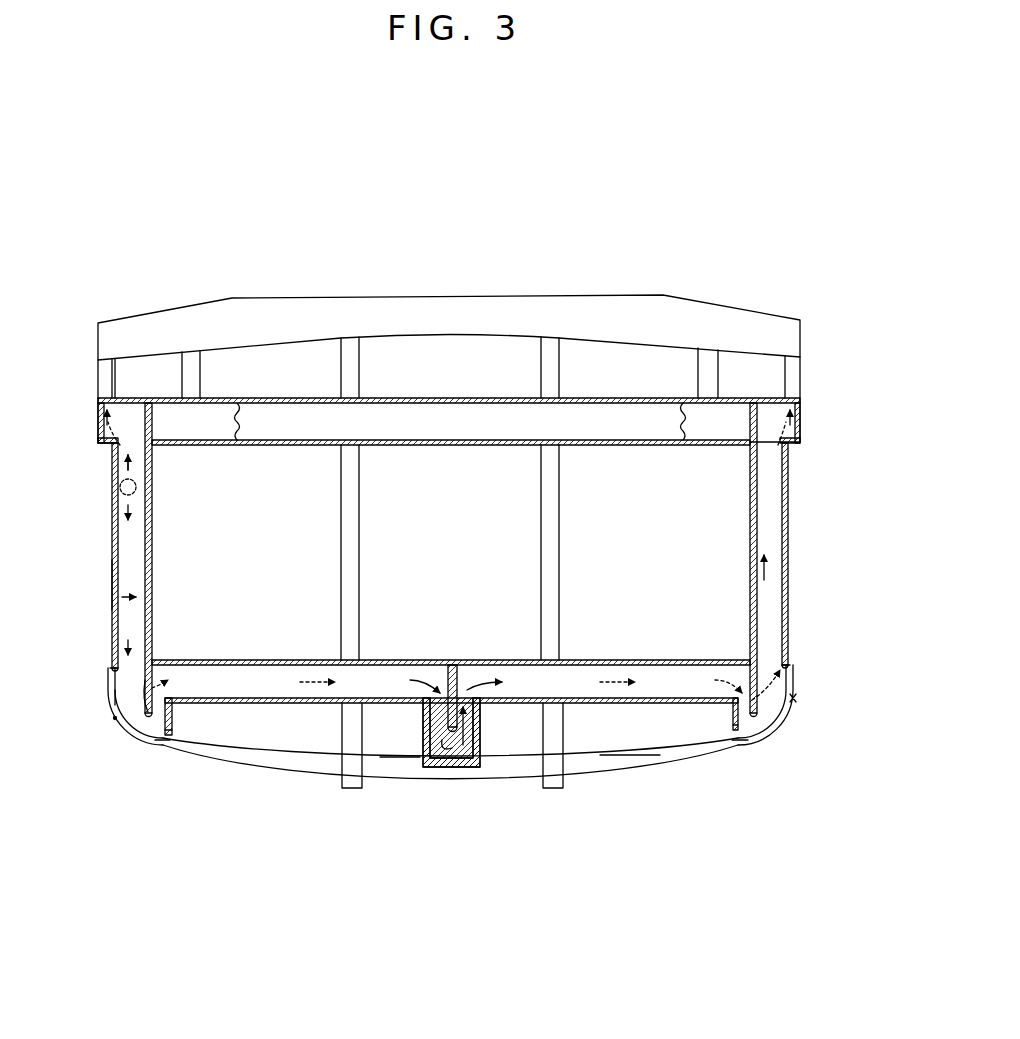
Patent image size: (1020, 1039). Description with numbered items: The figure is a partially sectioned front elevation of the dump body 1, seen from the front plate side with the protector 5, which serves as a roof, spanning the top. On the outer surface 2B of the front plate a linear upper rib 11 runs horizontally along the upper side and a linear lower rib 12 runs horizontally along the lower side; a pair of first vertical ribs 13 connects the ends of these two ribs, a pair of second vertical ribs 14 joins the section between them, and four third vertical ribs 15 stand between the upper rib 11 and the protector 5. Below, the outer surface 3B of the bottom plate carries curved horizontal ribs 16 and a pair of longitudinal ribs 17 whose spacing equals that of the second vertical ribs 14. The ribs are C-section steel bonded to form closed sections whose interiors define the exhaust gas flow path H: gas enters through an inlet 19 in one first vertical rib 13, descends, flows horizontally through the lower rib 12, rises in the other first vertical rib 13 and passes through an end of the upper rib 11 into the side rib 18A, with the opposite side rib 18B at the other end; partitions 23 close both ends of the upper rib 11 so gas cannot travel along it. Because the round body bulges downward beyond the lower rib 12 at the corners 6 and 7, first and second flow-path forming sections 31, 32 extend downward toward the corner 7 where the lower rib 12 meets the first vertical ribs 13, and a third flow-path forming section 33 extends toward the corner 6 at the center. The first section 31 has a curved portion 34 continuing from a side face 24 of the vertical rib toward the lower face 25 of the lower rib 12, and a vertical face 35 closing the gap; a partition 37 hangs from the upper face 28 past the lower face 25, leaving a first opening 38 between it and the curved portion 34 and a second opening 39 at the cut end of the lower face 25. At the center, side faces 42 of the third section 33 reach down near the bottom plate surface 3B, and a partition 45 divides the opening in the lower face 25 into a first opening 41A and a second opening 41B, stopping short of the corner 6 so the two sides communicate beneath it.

The body 1 is at (552, 200).
The protector 5 is at (614, 297).
The upper rib 11 is at (457, 398).
The third vertical ribs 15 is at (100, 378).
The partition 23 is at (152, 420).
The engagement flange 18B is at (100, 420).
The side rib 18A is at (800, 416).
The first vertical ribs 13 is at (112, 538).
The side face 24 is at (112, 585).
The exhaust gas flow path H is at (112, 598).
The outer surface of the front plate 2B is at (757, 490).
The inlet 19 is at (137, 487).
The second vertical ribs 14 is at (341, 545).
The upper face 28 is at (278, 660).
The lower rib 12 is at (432, 658).
The partition 45 is at (463, 665).
The first opening 41A is at (393, 660).
The second opening 41B is at (468, 660).
The lower face 25 is at (245, 703).
The vertical face 35 is at (170, 735).
The side faces 42 is at (423, 715).
The partition 37 is at (162, 668).
The first opening 38 is at (110, 668).
The corner 7 is at (140, 735).
The curved portion 34 is at (113, 700).
The first flow-path forming section 31 is at (115, 718).
The second flow-path forming section 32 is at (793, 698).
The second opening 39 is at (160, 738).
The corner 6 is at (290, 757).
The horizontal ribs 16 is at (225, 765).
The outer surface of the bottom plate 3B is at (632, 760).
The third flow-path forming section 33 is at (410, 742).
The longitudinal ribs 17 is at (350, 790).